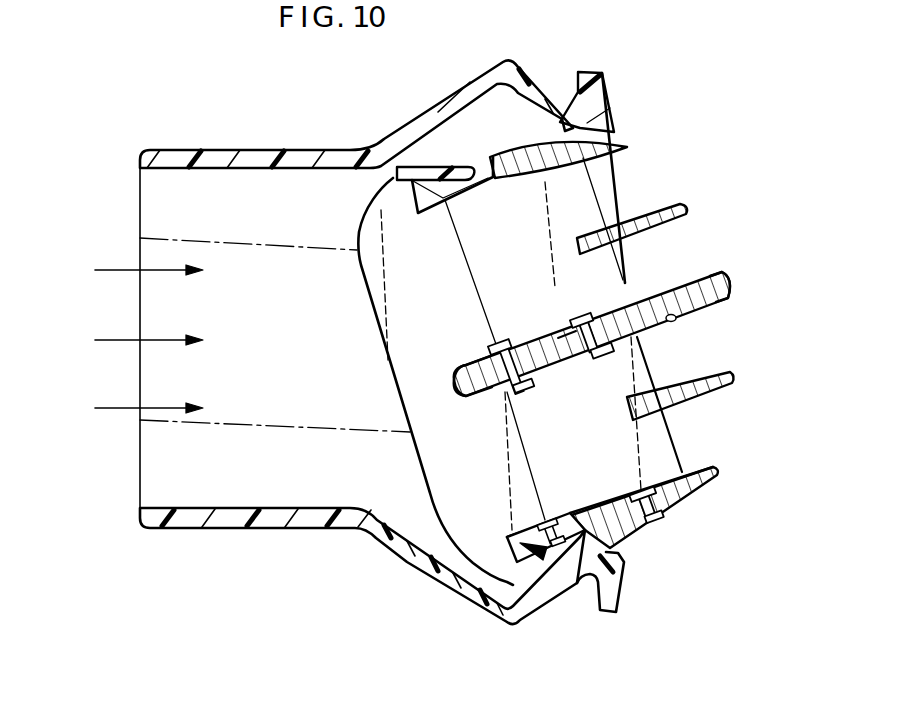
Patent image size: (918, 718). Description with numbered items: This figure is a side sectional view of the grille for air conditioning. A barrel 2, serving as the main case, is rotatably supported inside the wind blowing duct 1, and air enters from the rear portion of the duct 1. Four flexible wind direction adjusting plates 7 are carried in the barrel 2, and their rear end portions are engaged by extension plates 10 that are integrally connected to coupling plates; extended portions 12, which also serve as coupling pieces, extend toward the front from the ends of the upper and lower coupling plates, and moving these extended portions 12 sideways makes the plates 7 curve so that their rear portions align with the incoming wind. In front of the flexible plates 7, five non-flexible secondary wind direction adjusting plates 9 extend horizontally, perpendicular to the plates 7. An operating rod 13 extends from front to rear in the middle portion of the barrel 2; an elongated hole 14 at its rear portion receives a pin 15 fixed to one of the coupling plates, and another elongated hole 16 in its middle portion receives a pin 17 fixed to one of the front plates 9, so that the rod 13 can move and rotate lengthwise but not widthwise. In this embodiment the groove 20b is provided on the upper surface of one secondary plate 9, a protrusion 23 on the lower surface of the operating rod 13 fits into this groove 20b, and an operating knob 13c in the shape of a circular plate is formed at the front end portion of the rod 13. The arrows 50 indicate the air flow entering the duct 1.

The wind blowing duct 1 is at (422, 112).
The barrel 2 is at (612, 128).
The flexible wind direction adjusting plates 7 is at (591, 192).
The secondary wind direction adjusting plates 9 is at (690, 207).
The extension plates 10 is at (383, 318).
The extended portions 12 is at (447, 167).
The operating rod 13 is at (628, 350).
The operating knob 13c is at (712, 272).
The elongated hole 14 is at (486, 356).
The pin 15 is at (498, 344).
The elongated hole 16 is at (565, 338).
The pin 17 is at (584, 318).
The groove 20b is at (670, 321).
The protrusion 23 is at (660, 297).
The flow direction arrows 50 is at (108, 269).